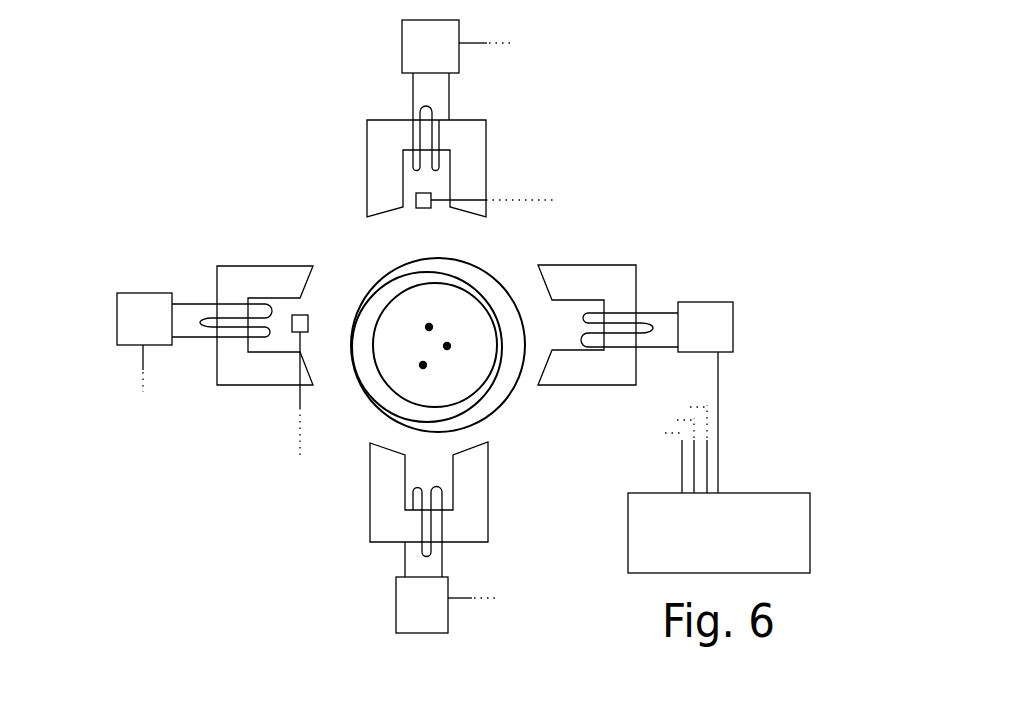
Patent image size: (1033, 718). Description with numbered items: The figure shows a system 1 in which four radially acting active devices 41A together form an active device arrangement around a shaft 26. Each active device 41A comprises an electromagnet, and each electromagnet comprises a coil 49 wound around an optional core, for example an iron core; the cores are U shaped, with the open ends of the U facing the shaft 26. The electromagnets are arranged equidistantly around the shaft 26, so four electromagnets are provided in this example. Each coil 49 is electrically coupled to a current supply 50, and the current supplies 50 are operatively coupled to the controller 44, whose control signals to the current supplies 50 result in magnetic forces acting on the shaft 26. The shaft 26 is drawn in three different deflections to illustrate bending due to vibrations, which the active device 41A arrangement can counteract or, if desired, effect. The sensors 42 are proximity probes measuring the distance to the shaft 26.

The apparatus 1 is at (712, 183).
The shaft 26 is at (355, 337).
The radially acting active device 41A is at (129, 260).
The sensor 42 is at (432, 195).
The controller 44 is at (763, 493).
The coil 49 is at (414, 134).
The current supply 50 is at (443, 57).